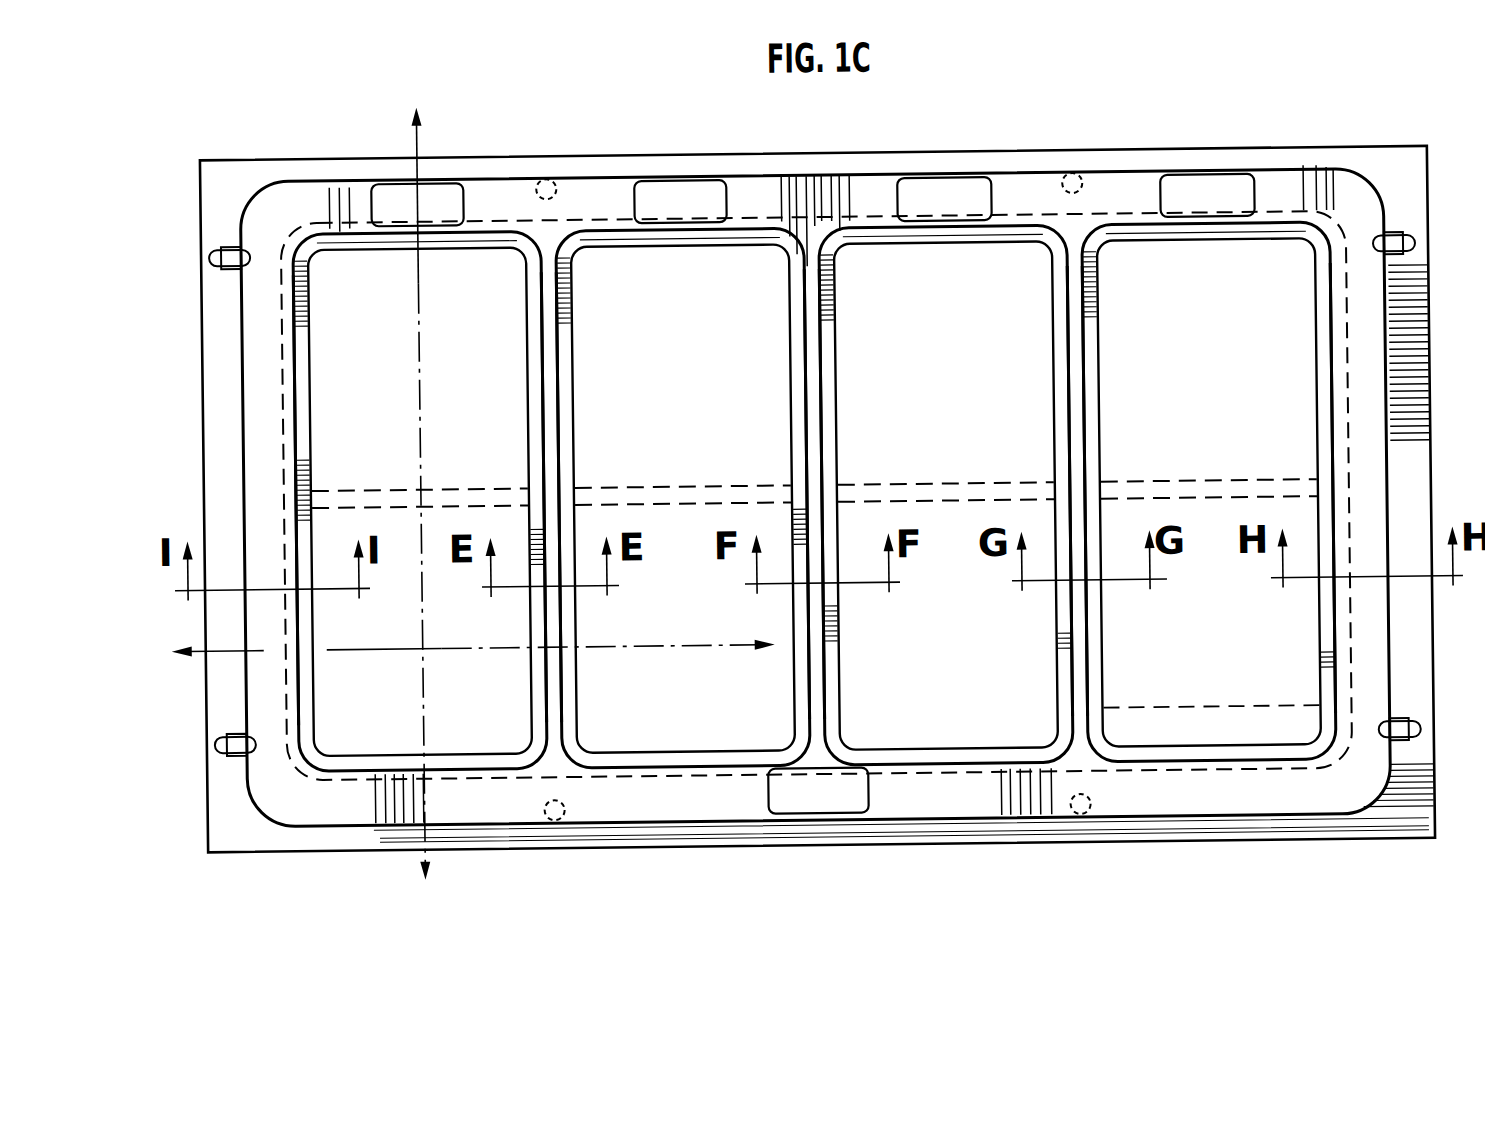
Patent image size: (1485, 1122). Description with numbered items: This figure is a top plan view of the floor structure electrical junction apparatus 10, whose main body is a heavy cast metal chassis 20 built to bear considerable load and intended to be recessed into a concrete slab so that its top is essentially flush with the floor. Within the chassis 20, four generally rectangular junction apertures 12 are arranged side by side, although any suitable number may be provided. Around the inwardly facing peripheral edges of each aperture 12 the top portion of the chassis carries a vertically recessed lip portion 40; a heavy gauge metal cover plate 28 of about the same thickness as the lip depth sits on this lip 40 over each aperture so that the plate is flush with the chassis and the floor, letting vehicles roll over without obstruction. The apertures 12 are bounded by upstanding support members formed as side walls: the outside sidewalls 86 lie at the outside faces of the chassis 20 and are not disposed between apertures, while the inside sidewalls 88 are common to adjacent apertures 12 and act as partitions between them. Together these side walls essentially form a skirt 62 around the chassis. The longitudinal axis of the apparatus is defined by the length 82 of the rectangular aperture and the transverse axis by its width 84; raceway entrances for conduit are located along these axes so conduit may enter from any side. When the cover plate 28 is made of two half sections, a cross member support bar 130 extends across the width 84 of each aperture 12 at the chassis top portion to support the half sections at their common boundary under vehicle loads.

The floor structure electrical junction apparatus 10 is at (509, 890).
The junction aperture 12 is at (395, 344).
The chassis 20 is at (241, 836).
The cover plate 28 is at (377, 733).
The recessed lip portion 40 is at (354, 758).
The skirt 62 is at (1091, 852).
The length of the rectangular aperture 82 is at (425, 138).
The width of the rectangular aperture 84 is at (198, 652).
The outside sidewall 86 is at (292, 432).
The inside sidewall 88 is at (554, 421).
The cross member support bar 130 is at (495, 490).